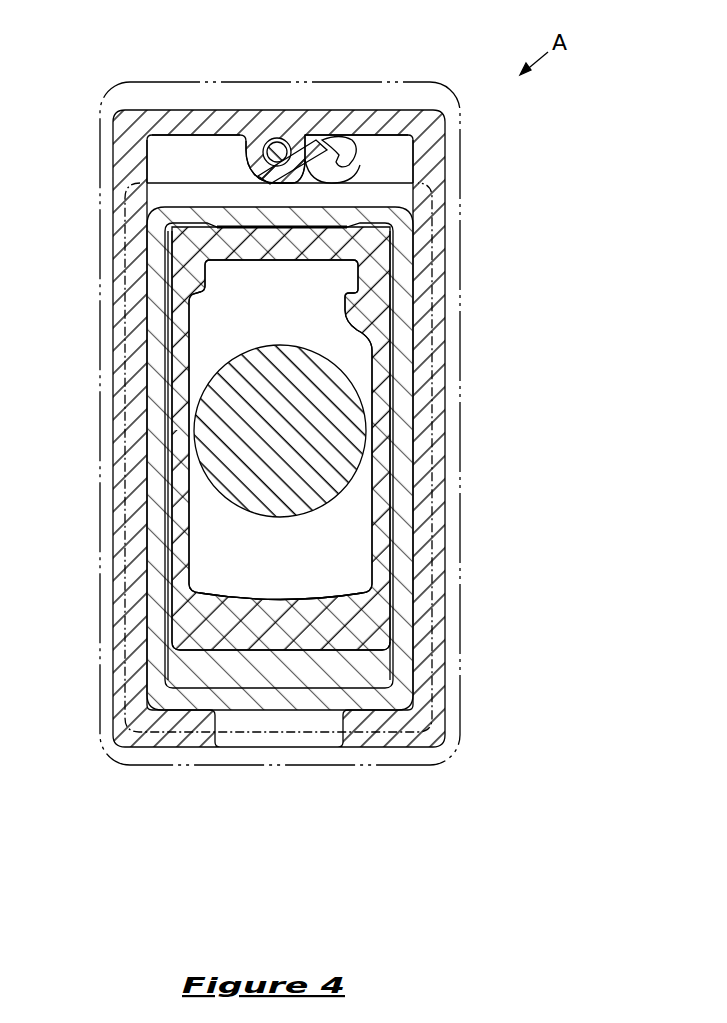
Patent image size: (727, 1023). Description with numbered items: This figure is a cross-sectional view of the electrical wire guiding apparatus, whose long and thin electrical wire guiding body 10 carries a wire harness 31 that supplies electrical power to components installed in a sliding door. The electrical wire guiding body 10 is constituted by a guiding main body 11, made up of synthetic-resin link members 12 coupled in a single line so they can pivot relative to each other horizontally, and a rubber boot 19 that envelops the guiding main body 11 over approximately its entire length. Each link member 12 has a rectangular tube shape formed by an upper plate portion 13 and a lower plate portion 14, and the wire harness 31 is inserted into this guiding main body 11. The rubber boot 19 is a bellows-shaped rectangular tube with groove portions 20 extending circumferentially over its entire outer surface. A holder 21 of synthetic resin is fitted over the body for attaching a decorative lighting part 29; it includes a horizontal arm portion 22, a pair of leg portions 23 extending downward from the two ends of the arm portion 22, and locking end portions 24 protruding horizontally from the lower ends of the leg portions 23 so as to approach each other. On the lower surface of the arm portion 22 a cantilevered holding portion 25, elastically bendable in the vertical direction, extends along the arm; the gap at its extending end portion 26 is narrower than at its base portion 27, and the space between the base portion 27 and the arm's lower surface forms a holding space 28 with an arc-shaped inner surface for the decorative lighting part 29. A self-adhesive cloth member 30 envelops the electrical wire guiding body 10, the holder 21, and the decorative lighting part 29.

The electrical wire guiding body 10 is at (172, 169).
The guiding main body 11 is at (398, 165).
The link member 12 is at (373, 258).
The upper plate portion 13 is at (260, 245).
The lower plate portion 14 is at (272, 637).
The rubber boot 19 is at (400, 213).
The groove portion 20 is at (348, 207).
The holder 21 is at (430, 120).
The arm portion 22 is at (204, 123).
The leg portion 23 is at (130, 380).
The locking end portion 24 is at (209, 725).
The holding portion 25 is at (346, 157).
The extending end portion 26 is at (340, 138).
The base portion 27 is at (250, 168).
The holding space 28 is at (279, 140).
The decorative lighting part 29 is at (291, 140).
The self-adhesive cloth member 30 is at (458, 318).
The wire harness 31 is at (255, 466).